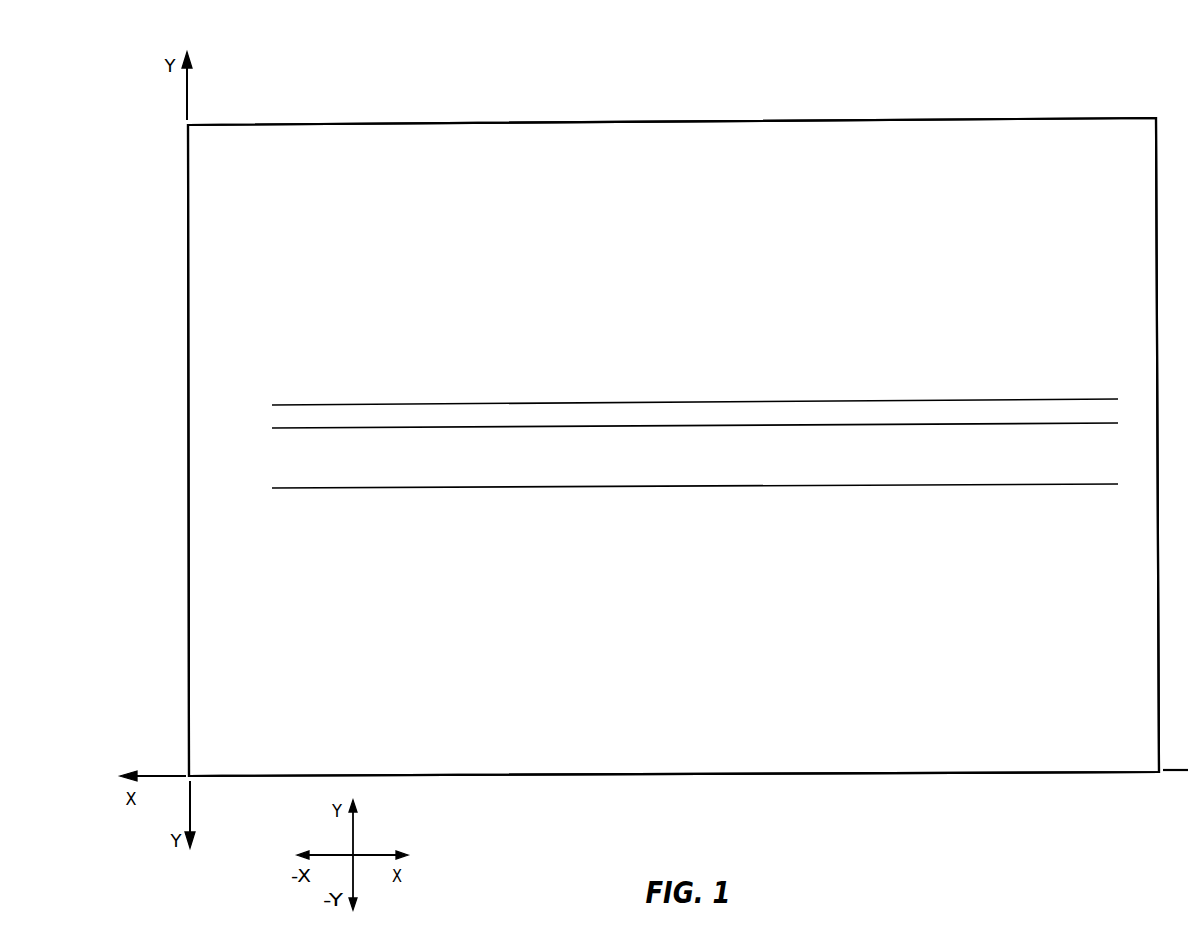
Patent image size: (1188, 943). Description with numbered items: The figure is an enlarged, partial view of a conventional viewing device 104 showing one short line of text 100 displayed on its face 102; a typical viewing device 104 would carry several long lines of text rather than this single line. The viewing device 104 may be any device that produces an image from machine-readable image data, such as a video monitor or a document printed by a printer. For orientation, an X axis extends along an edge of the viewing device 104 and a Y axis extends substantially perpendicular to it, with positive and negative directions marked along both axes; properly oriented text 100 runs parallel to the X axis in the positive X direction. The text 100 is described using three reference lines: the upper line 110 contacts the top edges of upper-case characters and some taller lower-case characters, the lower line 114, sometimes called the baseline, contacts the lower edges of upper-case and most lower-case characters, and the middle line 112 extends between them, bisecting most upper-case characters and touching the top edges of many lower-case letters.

The text 100 is at (274, 451).
The face 102 is at (703, 262).
The viewing device 104 is at (1076, 82).
The upper line 110 is at (284, 403).
The middle line 112 is at (476, 427).
The lower line 114 is at (284, 492).